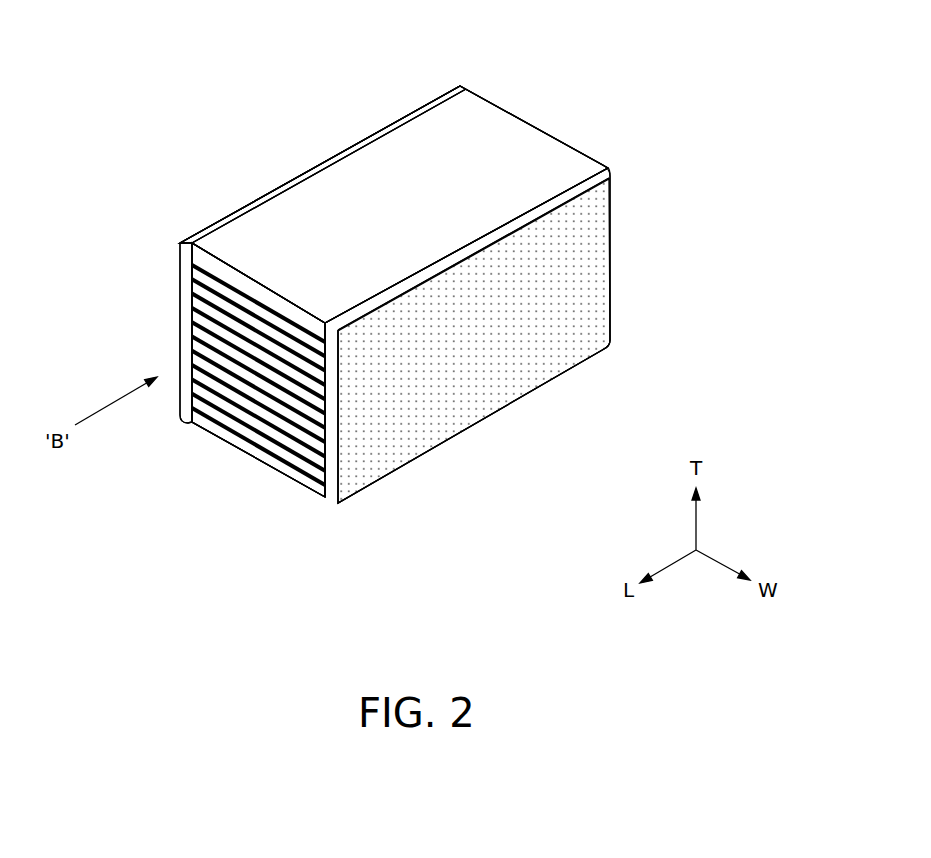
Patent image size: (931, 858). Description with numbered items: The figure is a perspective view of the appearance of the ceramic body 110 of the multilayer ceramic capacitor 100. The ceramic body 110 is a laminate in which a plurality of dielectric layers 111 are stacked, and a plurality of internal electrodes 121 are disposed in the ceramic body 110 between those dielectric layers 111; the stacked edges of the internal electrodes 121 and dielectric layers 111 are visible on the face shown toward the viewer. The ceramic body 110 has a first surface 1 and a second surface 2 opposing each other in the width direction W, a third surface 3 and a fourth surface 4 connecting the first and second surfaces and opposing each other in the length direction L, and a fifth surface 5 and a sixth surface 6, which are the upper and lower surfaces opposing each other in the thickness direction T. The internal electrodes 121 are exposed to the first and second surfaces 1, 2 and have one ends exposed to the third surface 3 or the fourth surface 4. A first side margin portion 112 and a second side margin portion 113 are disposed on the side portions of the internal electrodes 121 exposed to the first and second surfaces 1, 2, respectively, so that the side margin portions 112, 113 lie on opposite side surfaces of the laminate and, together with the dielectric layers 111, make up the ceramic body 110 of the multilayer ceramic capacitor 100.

The multilayer ceramic capacitor 100 is at (214, 36).
The ceramic body 110 is at (348, 187).
The dielectric layer 111 is at (193, 344).
The internal electrode 121 is at (192, 306).
The first side margin portion 112 is at (285, 188).
The second side margin portion 113 is at (568, 185).
The first surface 1 is at (250, 247).
The second surface 2 is at (556, 293).
The third surface 3 is at (257, 412).
The fourth surface 4 is at (535, 167).
The fifth surface 5 is at (418, 153).
The sixth surface 6 is at (485, 380).